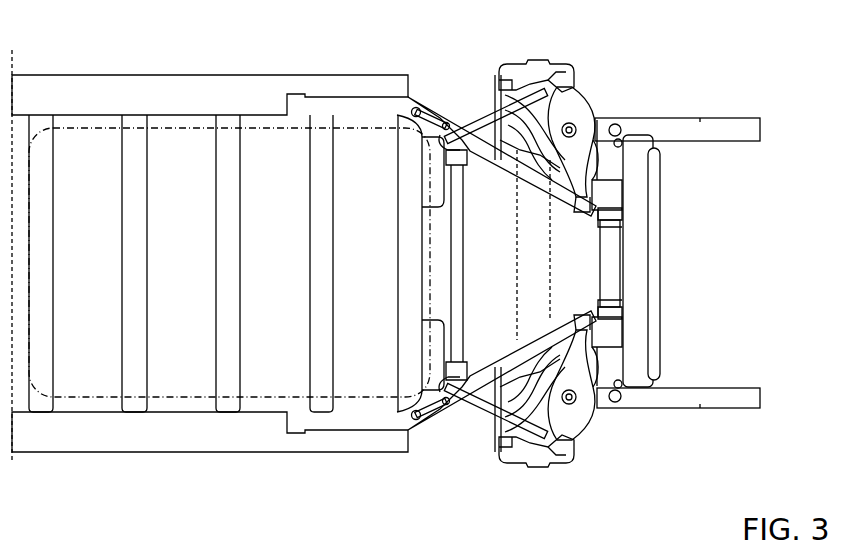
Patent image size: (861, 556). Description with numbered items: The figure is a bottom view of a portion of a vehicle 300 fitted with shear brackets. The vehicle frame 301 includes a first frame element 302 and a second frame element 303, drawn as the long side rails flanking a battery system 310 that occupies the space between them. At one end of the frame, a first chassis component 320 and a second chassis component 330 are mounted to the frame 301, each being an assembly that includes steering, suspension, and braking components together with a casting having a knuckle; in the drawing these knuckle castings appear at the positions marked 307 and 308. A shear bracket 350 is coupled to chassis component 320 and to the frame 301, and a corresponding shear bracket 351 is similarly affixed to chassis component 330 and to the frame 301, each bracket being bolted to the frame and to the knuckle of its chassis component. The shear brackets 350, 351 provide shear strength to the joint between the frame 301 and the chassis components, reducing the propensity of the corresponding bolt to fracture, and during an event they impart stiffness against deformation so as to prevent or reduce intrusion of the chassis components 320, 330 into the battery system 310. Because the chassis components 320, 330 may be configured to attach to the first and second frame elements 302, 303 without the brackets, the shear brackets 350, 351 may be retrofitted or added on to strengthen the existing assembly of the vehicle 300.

The vehicle 300 is at (123, 38).
The frame 301 is at (214, 73).
The first frame element 302 is at (210, 104).
The second frame element 303 is at (242, 440).
The first steering knuckle 307 is at (643, 107).
The second steering knuckle 308 is at (633, 440).
The battery system 310 is at (307, 220).
The chassis component 320 is at (571, 63).
The chassis component 330 is at (540, 466).
The shear bracket 350 is at (416, 105).
The shear bracket 351 is at (418, 423).